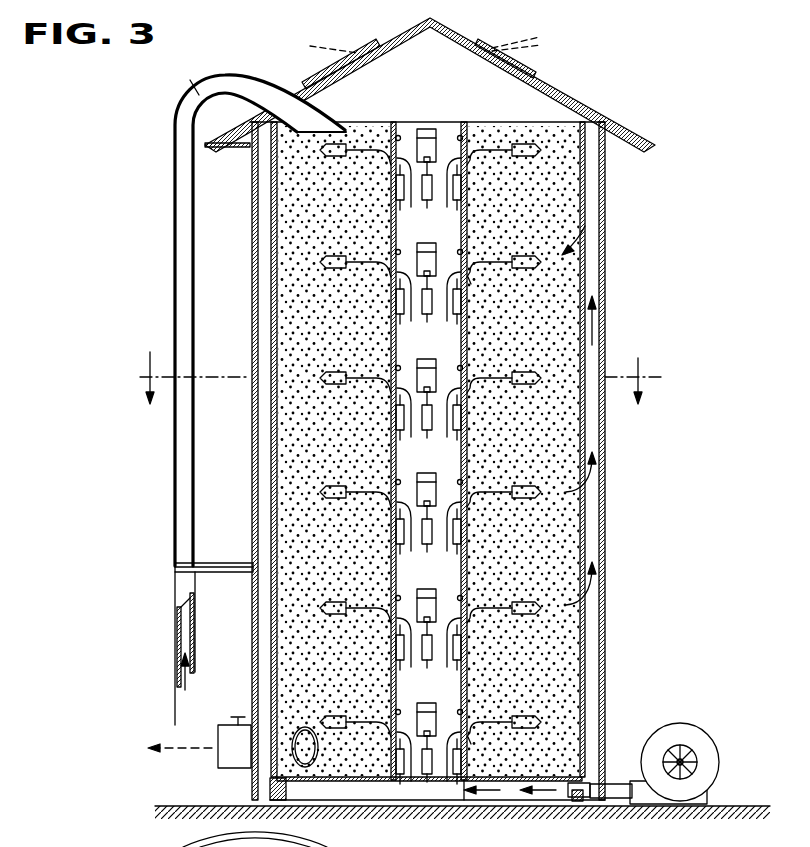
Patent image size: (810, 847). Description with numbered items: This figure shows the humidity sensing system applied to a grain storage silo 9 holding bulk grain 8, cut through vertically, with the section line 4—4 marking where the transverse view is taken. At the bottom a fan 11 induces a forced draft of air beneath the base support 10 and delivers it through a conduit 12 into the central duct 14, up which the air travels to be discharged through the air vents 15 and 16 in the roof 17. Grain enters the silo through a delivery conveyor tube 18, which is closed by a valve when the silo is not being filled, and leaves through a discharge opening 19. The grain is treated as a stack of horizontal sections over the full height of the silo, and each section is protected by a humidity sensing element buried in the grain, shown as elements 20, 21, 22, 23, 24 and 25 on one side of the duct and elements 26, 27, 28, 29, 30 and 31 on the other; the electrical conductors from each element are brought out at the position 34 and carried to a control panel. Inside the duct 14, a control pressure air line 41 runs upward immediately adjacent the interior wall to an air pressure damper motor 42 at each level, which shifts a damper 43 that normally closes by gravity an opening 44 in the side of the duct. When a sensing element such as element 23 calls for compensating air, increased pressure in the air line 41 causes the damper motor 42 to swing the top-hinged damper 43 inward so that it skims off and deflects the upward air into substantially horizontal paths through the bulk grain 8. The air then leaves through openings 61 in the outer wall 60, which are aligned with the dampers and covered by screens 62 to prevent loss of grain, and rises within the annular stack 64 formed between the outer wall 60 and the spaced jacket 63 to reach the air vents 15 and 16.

The section line 4— 4 is at (398, 378).
The bulk grain 8 is at (568, 284).
The grain storage silo 9 is at (250, 277).
The base support 10 is at (300, 790).
The fan 11 is at (682, 736).
The conduit 12 is at (618, 781).
The central duct 14 is at (455, 458).
The air vent 15 is at (348, 60).
The air vent 16 is at (521, 72).
The roof 17 is at (216, 138).
The delivery conveyor tube 18 is at (180, 240).
The discharge opening 19 is at (292, 746).
The humidity sensing element 20 is at (533, 706).
The humidity sensing element 21 is at (521, 601).
The humidity sensing element 22 is at (521, 485).
The humidity sensing element 23 is at (522, 371).
The humidity sensing element 24 is at (521, 256).
The humidity sensing element 25 is at (523, 157).
The humidity sensing element 26 is at (333, 715).
The humidity sensing element 27 is at (337, 596).
The humidity sensing element 28 is at (331, 485).
The humidity sensing element 29 is at (331, 371).
The humidity sensing element 30 is at (330, 269).
The humidity sensing element 31 is at (328, 158).
The conductor lead-out position 34 is at (505, 279).
The control pressure air line 41 is at (455, 322).
The air pressure damper motor 42 is at (466, 305).
The damper 43 is at (441, 260).
The opening 44 is at (458, 782).
The outer wall 60 is at (585, 533).
The openings 61 is at (586, 230).
The screens 62 is at (584, 272).
The spaced jacket 63 is at (606, 621).
The annular stack 64 is at (594, 360).